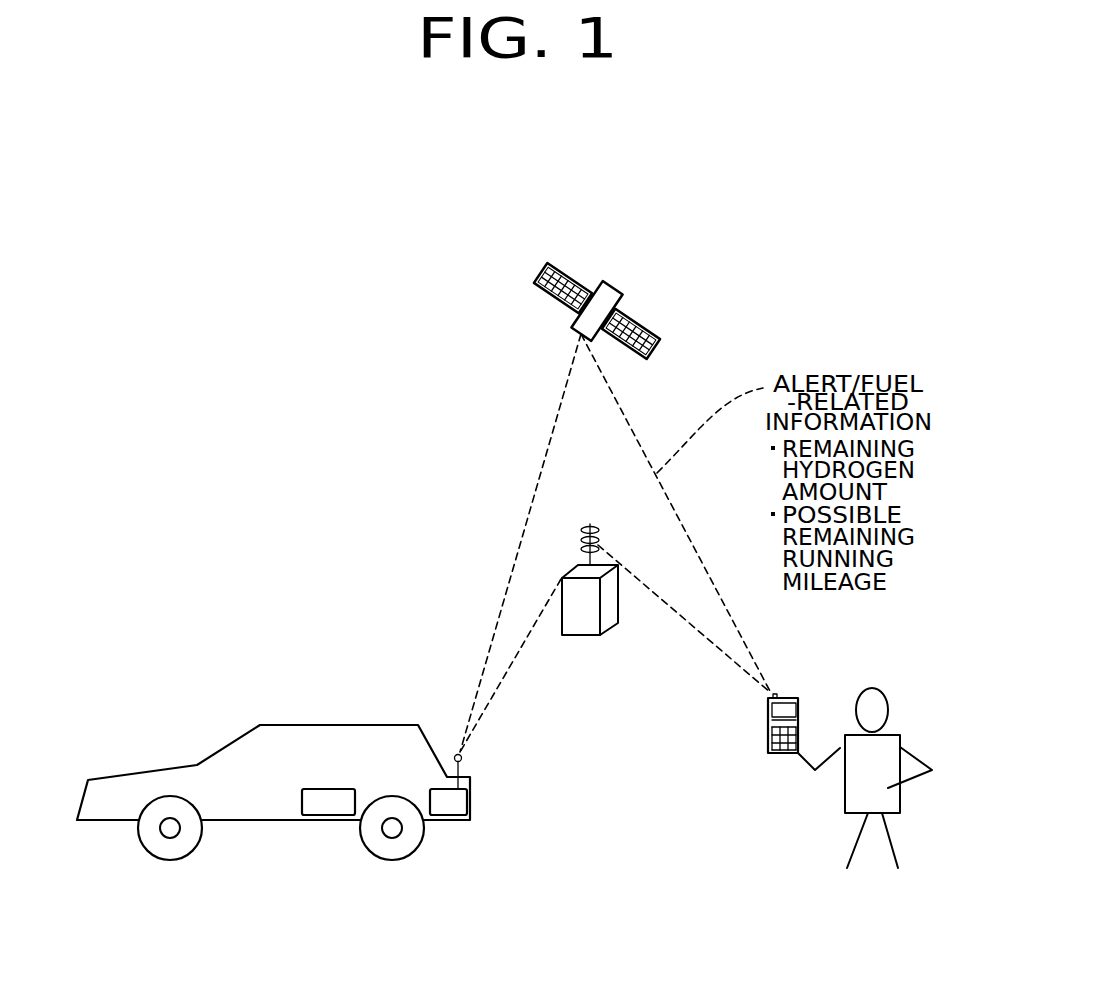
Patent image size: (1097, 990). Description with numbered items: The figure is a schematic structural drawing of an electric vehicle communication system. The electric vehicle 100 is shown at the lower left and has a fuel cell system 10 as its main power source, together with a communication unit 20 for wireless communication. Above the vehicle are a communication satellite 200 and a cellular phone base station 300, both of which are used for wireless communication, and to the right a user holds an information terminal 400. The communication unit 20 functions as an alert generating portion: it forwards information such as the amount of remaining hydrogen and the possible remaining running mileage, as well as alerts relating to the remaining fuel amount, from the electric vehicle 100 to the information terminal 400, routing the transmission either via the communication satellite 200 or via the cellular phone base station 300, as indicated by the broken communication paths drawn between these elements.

The electric vehicle 100 is at (359, 712).
The fuel cell system 10 is at (337, 789).
The communication unit 20 is at (443, 789).
The communication satellite 200 is at (637, 317).
The cellular phone base station 300 is at (592, 524).
The information terminal 400 is at (790, 700).